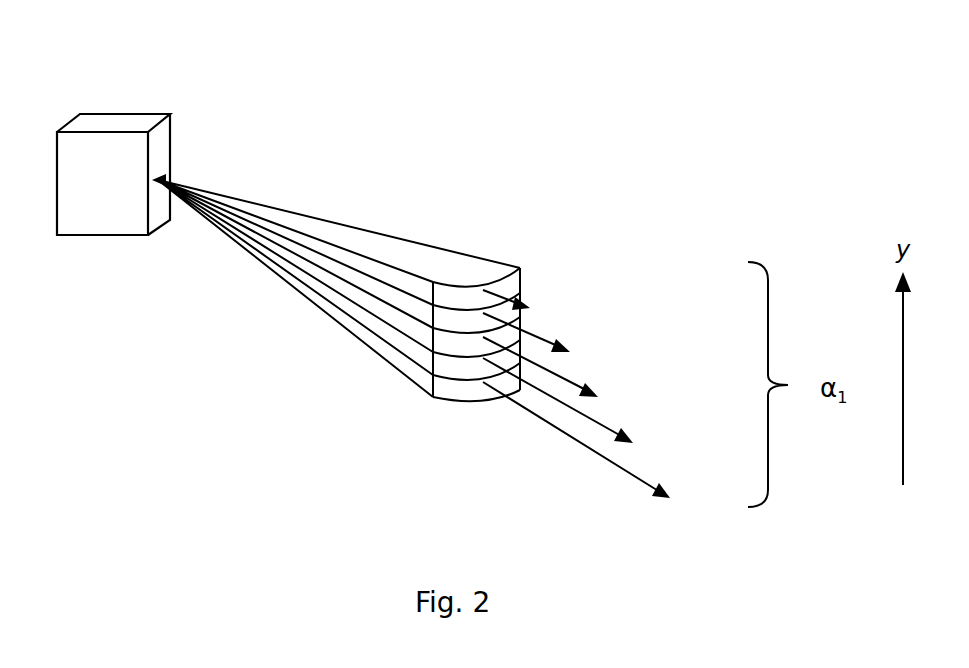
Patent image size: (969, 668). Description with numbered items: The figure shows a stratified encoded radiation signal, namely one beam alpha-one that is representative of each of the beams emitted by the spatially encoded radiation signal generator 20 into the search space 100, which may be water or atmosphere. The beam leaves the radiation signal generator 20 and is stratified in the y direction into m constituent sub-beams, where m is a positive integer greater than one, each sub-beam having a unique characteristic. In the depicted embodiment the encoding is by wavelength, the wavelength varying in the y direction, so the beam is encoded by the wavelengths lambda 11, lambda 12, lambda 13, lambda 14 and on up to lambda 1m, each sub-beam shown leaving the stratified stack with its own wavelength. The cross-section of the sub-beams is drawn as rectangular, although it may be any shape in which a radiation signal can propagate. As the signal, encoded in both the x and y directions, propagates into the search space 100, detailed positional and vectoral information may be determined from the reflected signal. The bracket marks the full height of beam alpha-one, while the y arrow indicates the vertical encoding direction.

The spatially encoded radiation signal generator 20 is at (100, 122).
The search space 100 is at (546, 124).
The wavelength beam lambda 1m is at (531, 311).
The wavelength beam lambda 14 is at (548, 344).
The wavelength beam lambda 13 is at (564, 379).
The wavelength beam lambda 12 is at (582, 414).
The wavelength beam lambda 11 is at (599, 454).